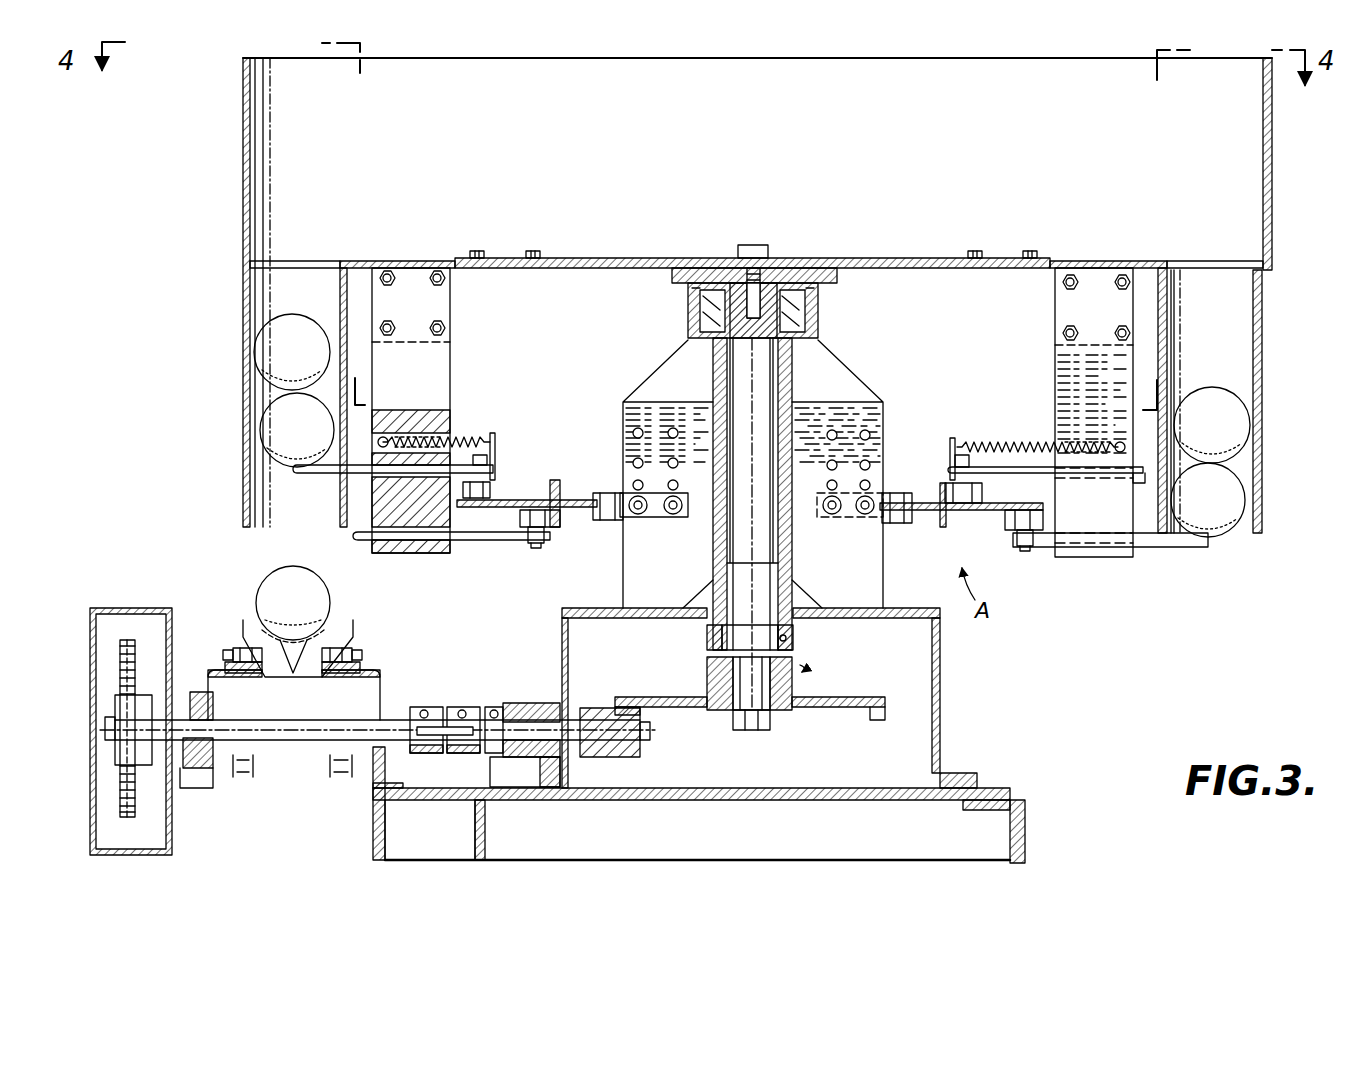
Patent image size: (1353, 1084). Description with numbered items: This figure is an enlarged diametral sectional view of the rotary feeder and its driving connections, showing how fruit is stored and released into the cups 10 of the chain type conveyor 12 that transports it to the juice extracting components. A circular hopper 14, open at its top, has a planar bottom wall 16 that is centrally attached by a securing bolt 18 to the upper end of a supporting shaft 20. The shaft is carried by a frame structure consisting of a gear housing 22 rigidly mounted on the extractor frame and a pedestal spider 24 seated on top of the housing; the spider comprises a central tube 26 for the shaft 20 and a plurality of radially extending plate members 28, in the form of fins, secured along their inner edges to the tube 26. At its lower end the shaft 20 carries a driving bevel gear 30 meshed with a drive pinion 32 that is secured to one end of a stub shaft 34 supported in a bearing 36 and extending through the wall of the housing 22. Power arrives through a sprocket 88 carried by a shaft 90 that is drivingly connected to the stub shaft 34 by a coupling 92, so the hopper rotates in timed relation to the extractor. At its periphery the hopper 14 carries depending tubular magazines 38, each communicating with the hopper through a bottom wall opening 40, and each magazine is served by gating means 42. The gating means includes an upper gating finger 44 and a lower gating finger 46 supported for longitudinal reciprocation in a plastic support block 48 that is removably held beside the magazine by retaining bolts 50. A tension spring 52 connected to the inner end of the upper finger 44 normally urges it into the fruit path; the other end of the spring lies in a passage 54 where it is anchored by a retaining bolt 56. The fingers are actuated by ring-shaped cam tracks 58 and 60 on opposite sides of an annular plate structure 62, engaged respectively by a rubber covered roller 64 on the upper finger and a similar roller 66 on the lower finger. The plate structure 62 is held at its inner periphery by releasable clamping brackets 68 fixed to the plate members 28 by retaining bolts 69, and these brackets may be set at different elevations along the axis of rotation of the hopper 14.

The cups 10 is at (325, 602).
The chain type conveyor 12 is at (368, 652).
The circular hopper 14 is at (1272, 167).
The planar bottom wall 16 is at (870, 262).
The securing bolt 18 is at (751, 245).
The supporting shaft 20 is at (764, 471).
The gear housing 22 is at (940, 708).
The pedestal spider 24 is at (832, 346).
The central tube 26 is at (793, 372).
The plate members 28 is at (698, 396).
The driving bevel gear 30 is at (836, 708).
The drive pinion 32 is at (594, 708).
The stub shaft 34 is at (530, 703).
The bearing 36 is at (515, 760).
The tubular magazines 38 is at (243, 400).
The bottom wall opening 40 is at (340, 262).
The gating means 42 is at (754, 440).
The upper gating finger 44 is at (325, 474).
The lower gating finger 46 is at (353, 537).
The support block 48 is at (450, 413).
The retaining bolts 50 is at (533, 251).
The tension spring 52 is at (470, 440).
The passage 54 is at (425, 437).
The retaining bolt 56 is at (383, 437).
The cam track 58 is at (555, 480).
The cam track 60 is at (520, 520).
The annular plate structure 62 is at (935, 512).
The roller 64 is at (480, 484).
The roller 66 is at (544, 540).
The clamping brackets 68 is at (606, 493).
The retaining bolts 69 is at (638, 514).
The sprocket 88 is at (92, 808).
The shaft 90 is at (310, 742).
The coupling 92 is at (448, 707).